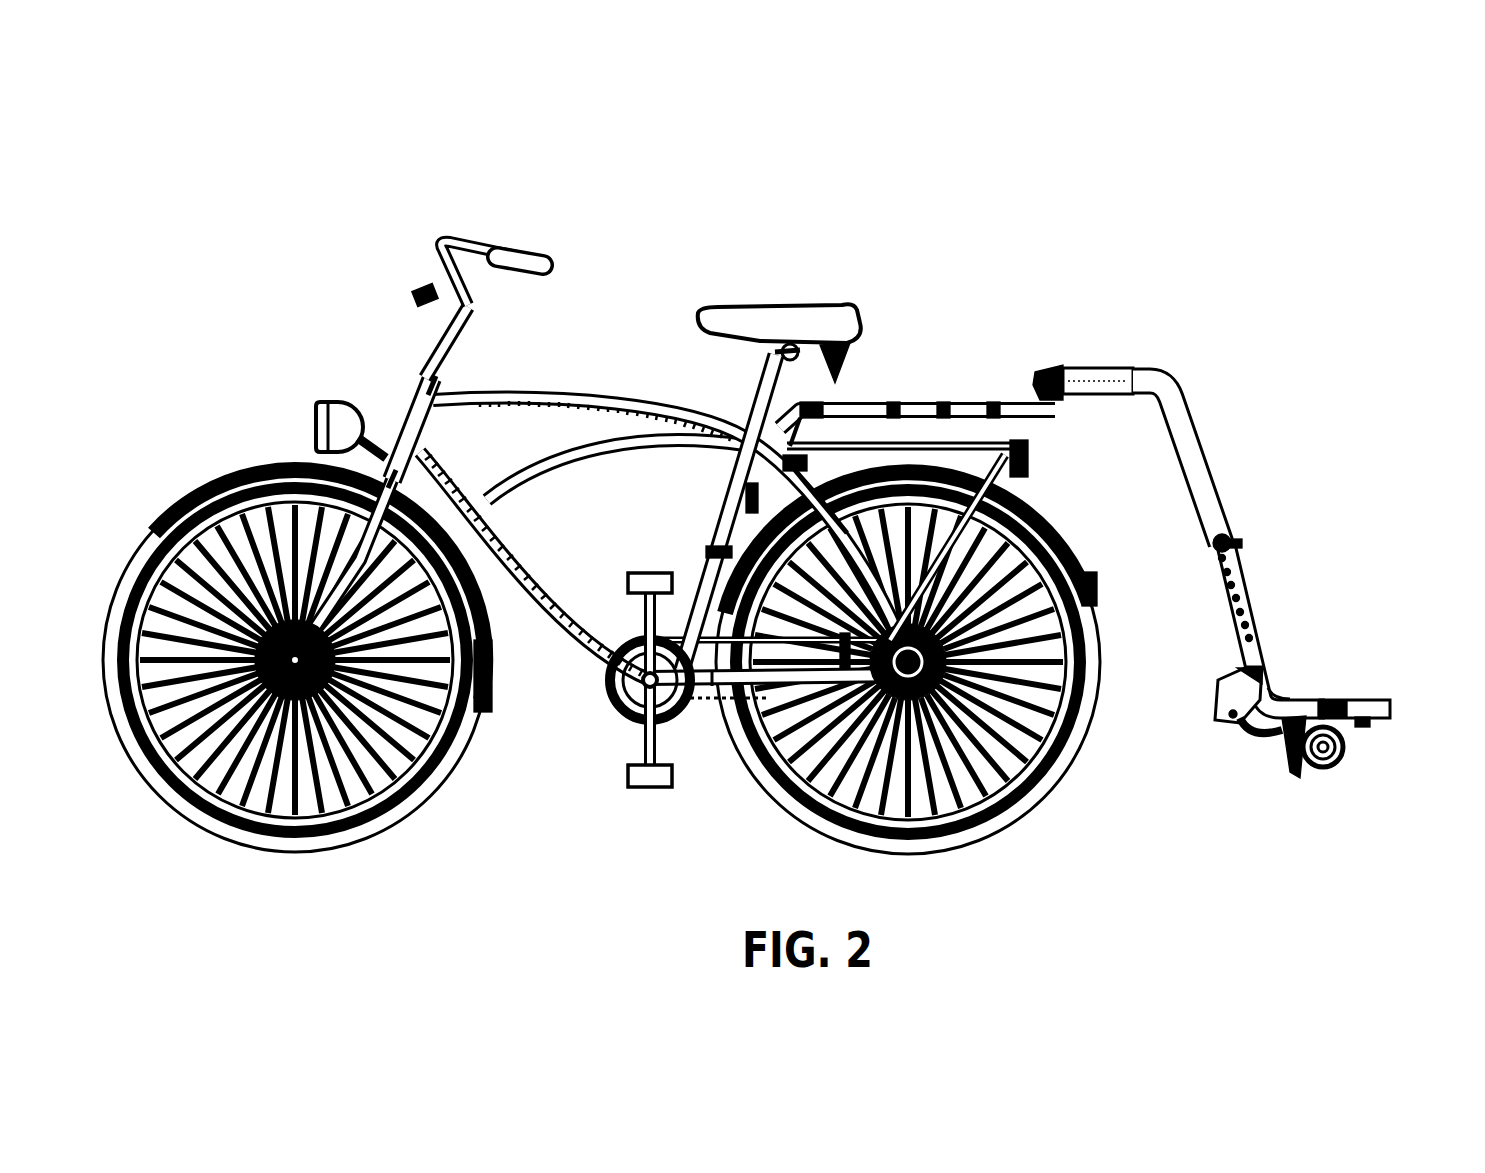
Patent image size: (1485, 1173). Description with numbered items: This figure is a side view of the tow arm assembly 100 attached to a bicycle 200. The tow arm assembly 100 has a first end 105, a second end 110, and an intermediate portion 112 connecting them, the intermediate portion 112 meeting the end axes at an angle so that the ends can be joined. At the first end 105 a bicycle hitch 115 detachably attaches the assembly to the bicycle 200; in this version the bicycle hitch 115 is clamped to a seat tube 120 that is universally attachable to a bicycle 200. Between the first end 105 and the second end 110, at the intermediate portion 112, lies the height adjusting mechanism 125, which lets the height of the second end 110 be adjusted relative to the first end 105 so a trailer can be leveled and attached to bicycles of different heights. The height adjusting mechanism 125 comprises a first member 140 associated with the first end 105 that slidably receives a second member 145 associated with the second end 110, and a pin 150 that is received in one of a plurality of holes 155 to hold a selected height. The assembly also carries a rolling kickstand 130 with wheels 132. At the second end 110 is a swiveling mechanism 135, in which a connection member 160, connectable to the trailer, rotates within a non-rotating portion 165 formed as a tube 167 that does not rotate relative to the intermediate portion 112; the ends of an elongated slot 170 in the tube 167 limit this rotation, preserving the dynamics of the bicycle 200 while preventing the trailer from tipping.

The bicycle 200 is at (601, 467).
The tow arm assembly 100 is at (1225, 547).
The first end 105 is at (1088, 330).
The second end 110 is at (1289, 684).
The intermediate portion 112 is at (1238, 428).
The bicycle hitch 115 is at (1052, 362).
The seat tube 120 is at (877, 382).
The height adjusting mechanism 125 is at (1205, 602).
The rolling kickstand 130 is at (1289, 808).
The wheels 132 is at (1337, 767).
The swiveling mechanism 135 is at (1367, 690).
The first member 140 is at (1200, 458).
The second member 145 is at (1227, 625).
The pin 150 is at (1227, 542).
The holes 155 is at (1248, 575).
The connection member 160 is at (1377, 723).
The non-rotating portion 165 is at (1312, 688).
The tube 167 is at (1320, 700).
The elongated slot 170 is at (1343, 743).